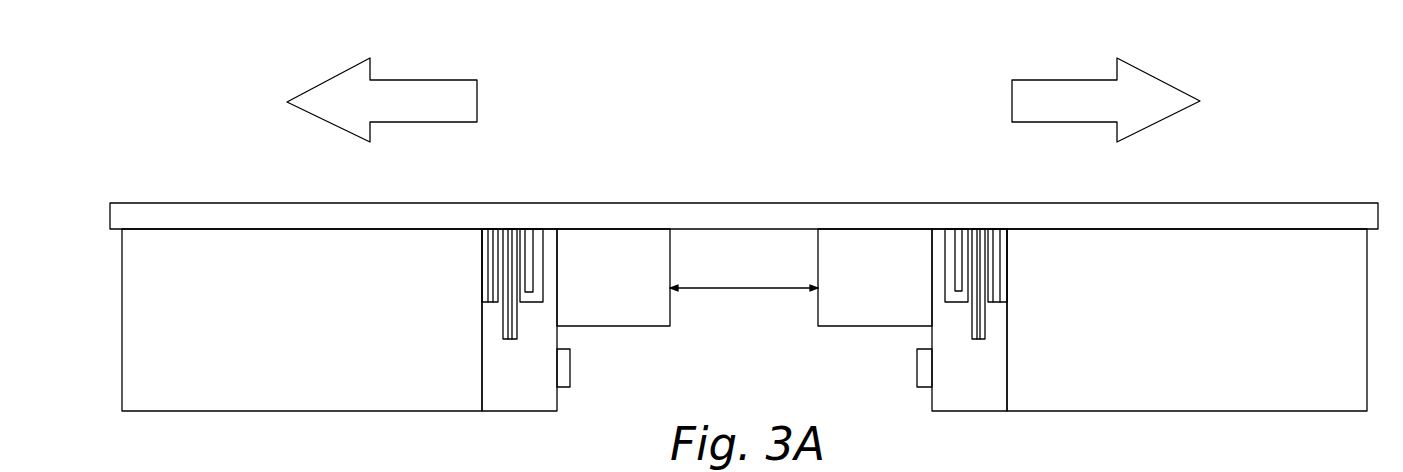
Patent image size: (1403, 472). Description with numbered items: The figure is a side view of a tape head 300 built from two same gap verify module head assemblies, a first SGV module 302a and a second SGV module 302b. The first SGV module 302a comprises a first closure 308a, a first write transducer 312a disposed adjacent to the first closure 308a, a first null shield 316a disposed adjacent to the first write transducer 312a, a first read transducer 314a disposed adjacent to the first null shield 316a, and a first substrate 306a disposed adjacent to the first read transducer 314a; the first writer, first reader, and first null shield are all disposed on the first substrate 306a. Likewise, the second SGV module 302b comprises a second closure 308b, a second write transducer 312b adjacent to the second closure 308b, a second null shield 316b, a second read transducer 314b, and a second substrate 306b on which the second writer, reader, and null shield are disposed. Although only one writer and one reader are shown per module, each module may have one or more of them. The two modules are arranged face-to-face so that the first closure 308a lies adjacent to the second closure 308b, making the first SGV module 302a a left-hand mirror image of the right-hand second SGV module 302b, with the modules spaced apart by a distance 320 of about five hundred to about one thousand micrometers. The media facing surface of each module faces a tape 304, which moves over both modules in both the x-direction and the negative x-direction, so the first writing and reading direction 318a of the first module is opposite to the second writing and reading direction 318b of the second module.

The tape head 300 is at (213, 80).
The first SGV module 302a is at (280, 171).
The second SGV module 302b is at (1209, 169).
The tape 304 is at (742, 212).
The first substrate 306a is at (330, 332).
The second substrate 306b is at (1210, 332).
The first closure 308a is at (637, 287).
The second closure 308b is at (900, 287).
The first write transducer 312a is at (537, 235).
The second write transducer 312b is at (950, 237).
The first read transducer 314a is at (490, 232).
The second read transducer 314b is at (995, 233).
The first null shield 316a is at (505, 233).
The second null shield 316b is at (980, 237).
The first writing and reading direction 318a is at (452, 112).
The second writing and reading direction 318b is at (1088, 112).
The distance 320 is at (742, 290).